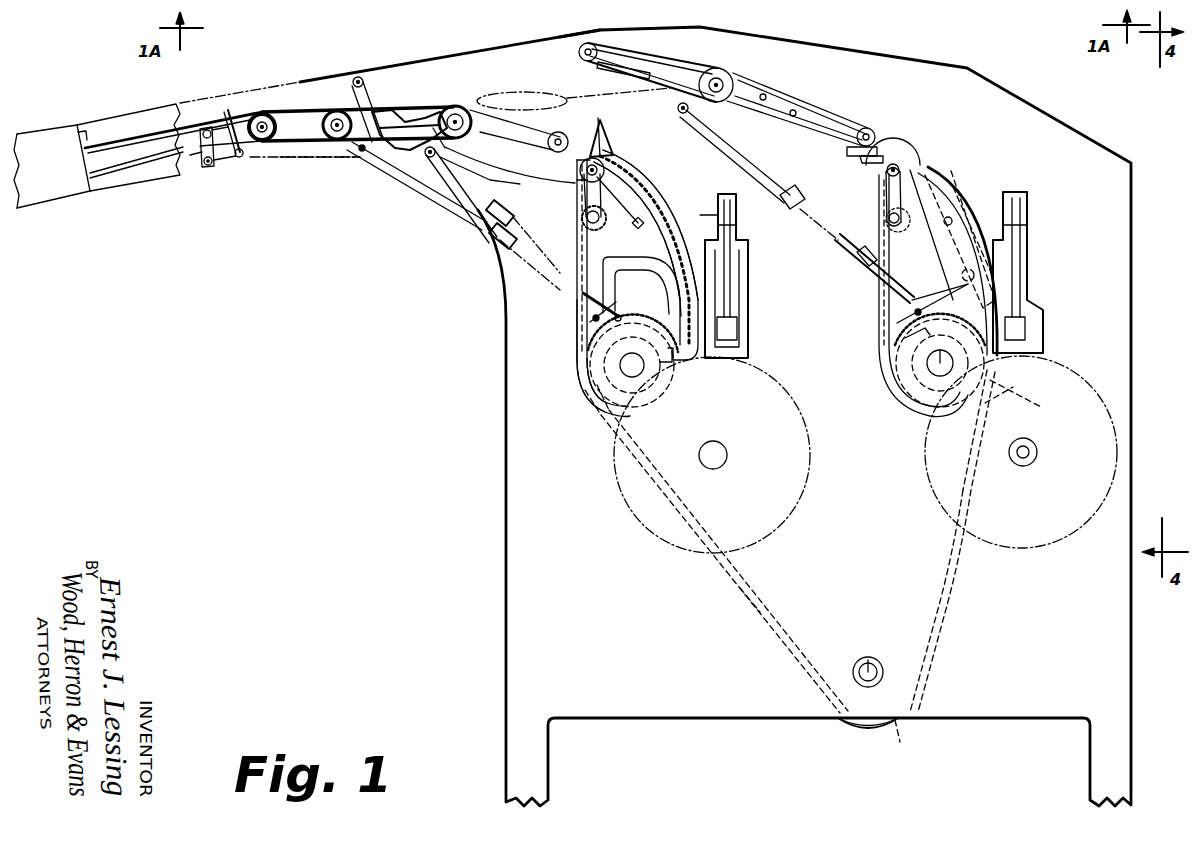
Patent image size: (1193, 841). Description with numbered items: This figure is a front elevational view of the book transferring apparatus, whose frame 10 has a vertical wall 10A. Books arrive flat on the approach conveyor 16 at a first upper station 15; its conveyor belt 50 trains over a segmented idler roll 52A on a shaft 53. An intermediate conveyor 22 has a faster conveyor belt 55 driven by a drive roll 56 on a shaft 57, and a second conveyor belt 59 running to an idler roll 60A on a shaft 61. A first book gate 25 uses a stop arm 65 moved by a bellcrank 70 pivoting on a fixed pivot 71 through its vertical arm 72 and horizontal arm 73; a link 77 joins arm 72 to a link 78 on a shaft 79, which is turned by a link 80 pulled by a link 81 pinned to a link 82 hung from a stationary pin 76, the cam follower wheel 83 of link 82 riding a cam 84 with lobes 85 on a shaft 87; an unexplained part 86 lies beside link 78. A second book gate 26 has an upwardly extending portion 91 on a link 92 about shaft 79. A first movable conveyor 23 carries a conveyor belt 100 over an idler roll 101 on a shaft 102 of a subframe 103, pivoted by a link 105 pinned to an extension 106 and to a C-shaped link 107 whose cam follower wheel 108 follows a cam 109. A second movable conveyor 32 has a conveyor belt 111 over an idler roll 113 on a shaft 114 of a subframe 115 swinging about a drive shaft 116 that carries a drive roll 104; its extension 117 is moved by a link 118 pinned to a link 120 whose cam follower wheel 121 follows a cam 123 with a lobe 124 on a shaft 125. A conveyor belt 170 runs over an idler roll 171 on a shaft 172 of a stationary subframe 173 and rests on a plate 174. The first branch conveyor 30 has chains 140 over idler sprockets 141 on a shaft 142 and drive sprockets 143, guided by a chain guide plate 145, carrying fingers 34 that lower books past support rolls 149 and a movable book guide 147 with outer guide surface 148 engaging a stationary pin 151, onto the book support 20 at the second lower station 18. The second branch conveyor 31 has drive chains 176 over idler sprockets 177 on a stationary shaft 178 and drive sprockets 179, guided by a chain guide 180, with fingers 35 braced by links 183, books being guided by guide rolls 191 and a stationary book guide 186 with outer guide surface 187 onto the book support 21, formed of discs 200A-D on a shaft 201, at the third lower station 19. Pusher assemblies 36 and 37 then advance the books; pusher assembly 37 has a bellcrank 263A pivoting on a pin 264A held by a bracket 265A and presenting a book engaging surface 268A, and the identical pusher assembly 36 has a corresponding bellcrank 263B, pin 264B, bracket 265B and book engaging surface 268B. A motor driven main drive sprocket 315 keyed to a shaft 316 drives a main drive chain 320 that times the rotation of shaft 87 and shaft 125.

The machine frame 10 is at (1131, 372).
The frame side plate 10A is at (1059, 640).
The infeed conveyor section 15 is at (238, 58).
The infeed conveyor slab 16 is at (125, 135).
The first roller 18 is at (790, 370).
The second transfer station 19 is at (1058, 355).
The roller path 20 is at (822, 400).
The second roller 21 is at (1112, 398).
The first transfer conveyor 22 is at (394, 53).
The sheet 23 is at (530, 110).
The guide rod 25 is at (238, 104).
The second conveyor section 26 is at (441, 102).
The first stacking unit 30 is at (673, 172).
The second stacking unit 31 is at (953, 165).
The frame top edge 32 is at (606, 39).
The deflector 34 is at (609, 125).
The sheet path 35 is at (1046, 410).
The first hydraulic cylinder 36 is at (740, 300).
The second hydraulic cylinder 37 is at (1030, 290).
The conveyor end block 50 is at (78, 140).
The pulley 52A is at (262, 143).
The pulley shaft 53 is at (262, 143).
The sheet path line 55 is at (303, 160).
The lower belt run 56 is at (335, 148).
The pulley 57 is at (338, 108).
The link 59 is at (400, 178).
The pulley hub 60A is at (457, 138).
The pulley 61 is at (465, 108).
The roller 65 is at (232, 160).
The bracket 70 is at (196, 148).
The pin 71 is at (206, 168).
The connector 72 is at (190, 160).
The pin 73 is at (226, 165).
The curved arm 76 is at (682, 250).
The upper belt run 77 is at (292, 100).
The pivot link 78 is at (360, 78).
The bracket 79 is at (380, 150).
The link 80 is at (356, 162).
The link 81 is at (445, 203).
The block 82 is at (634, 304).
The guide wall 83 is at (575, 368).
The guide curve 84 is at (586, 396).
The guide lip 85 is at (605, 420).
The bracket bar 86 is at (418, 112).
The cam 87 is at (641, 378).
The lever 91 is at (437, 128).
The pivot 92 is at (388, 158).
The arm 100 is at (507, 112).
The guide top 101 is at (592, 145).
The roller 102 is at (555, 152).
The belt run 103 is at (508, 148).
The roller 104 is at (722, 78).
The cylinder 105 is at (490, 218).
The belt 106 is at (480, 172).
The link line 107 is at (596, 273).
The pivot pin 108 is at (588, 320).
The pin 109 is at (580, 350).
The upper belt 111 is at (690, 48).
The plate 113 is at (600, 66).
The roller 114 is at (580, 52).
The lower belt 115 is at (645, 50).
The bar 116 is at (748, 88).
The pivot 117 is at (668, 116).
The arm 118 is at (782, 194).
The pin 120 is at (935, 300).
The link 121 is at (893, 325).
The guide inner wall 123 is at (910, 398).
The wedge 124 is at (895, 337).
The cam 125 is at (938, 350).
The guide 140 is at (572, 392).
The pivot 141 is at (612, 170).
The guide top 142 is at (578, 186).
The hook 143 is at (674, 368).
The inner arc 145 is at (666, 212).
The outer arc 147 is at (692, 188).
The stop 148 is at (728, 212).
The deflector tip 149 is at (603, 120).
The gear 151 is at (634, 226).
The bar 170 is at (800, 106).
The roller 171 is at (878, 133).
The bar 172 is at (868, 128).
The bar 173 is at (834, 115).
The bar 174 is at (800, 103).
The link 176 is at (880, 292).
The arm 177 is at (880, 195).
The pivot 178 is at (907, 163).
The guide outer wall 179 is at (905, 372).
The bar 180 is at (945, 230).
The path 183 is at (1000, 420).
The outer arc 186 is at (972, 182).
The inner arc 187 is at (1010, 187).
The roller 191 is at (918, 146).
The belts 200A-D is at (1045, 547).
The shaft 201 is at (1023, 460).
The piston rod 263A is at (1021, 262).
The piston rod 263B is at (735, 277).
The rod end 264A is at (1028, 220).
The rod end 264B is at (738, 222).
The rod cap 265A is at (1028, 198).
The rod cap 265B is at (748, 243).
The piston 268A is at (1025, 328).
The piston 268B is at (737, 328).
The belt 315 is at (900, 742).
The roller 316 is at (870, 657).
The belt run 320 is at (750, 612).